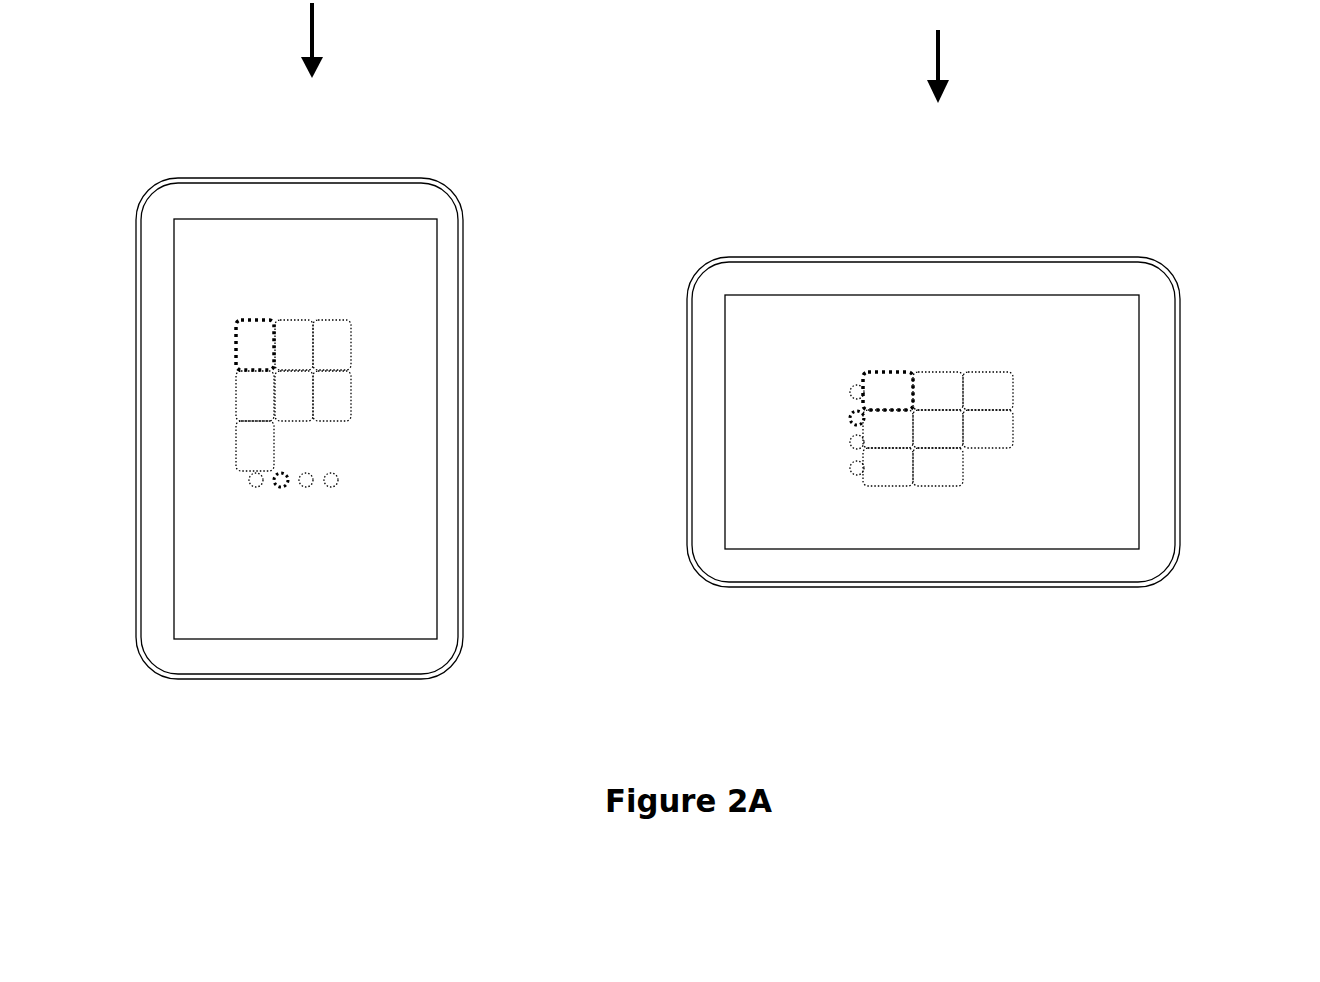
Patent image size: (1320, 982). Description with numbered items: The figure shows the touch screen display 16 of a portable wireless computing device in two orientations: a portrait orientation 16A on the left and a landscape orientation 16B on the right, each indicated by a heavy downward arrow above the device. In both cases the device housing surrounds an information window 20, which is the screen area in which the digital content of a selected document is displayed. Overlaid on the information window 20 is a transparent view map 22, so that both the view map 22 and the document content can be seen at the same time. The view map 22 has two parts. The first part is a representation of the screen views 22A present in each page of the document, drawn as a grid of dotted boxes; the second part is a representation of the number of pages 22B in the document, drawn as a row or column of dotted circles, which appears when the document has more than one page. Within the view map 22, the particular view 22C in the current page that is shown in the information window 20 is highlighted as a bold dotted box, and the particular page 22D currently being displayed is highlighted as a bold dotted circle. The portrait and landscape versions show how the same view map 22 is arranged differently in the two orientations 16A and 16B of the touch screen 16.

The touch screen display 16 is at (257, 180).
The portrait orientation 16A is at (337, 40).
The landscape orientation 16B is at (963, 65).
The information window 20 is at (428, 268).
The transparent view map 22 is at (352, 382).
The screen views 22A is at (235, 397).
The number of pages 22B is at (235, 485).
The particular view 22C is at (262, 317).
The particular page 22D is at (287, 487).